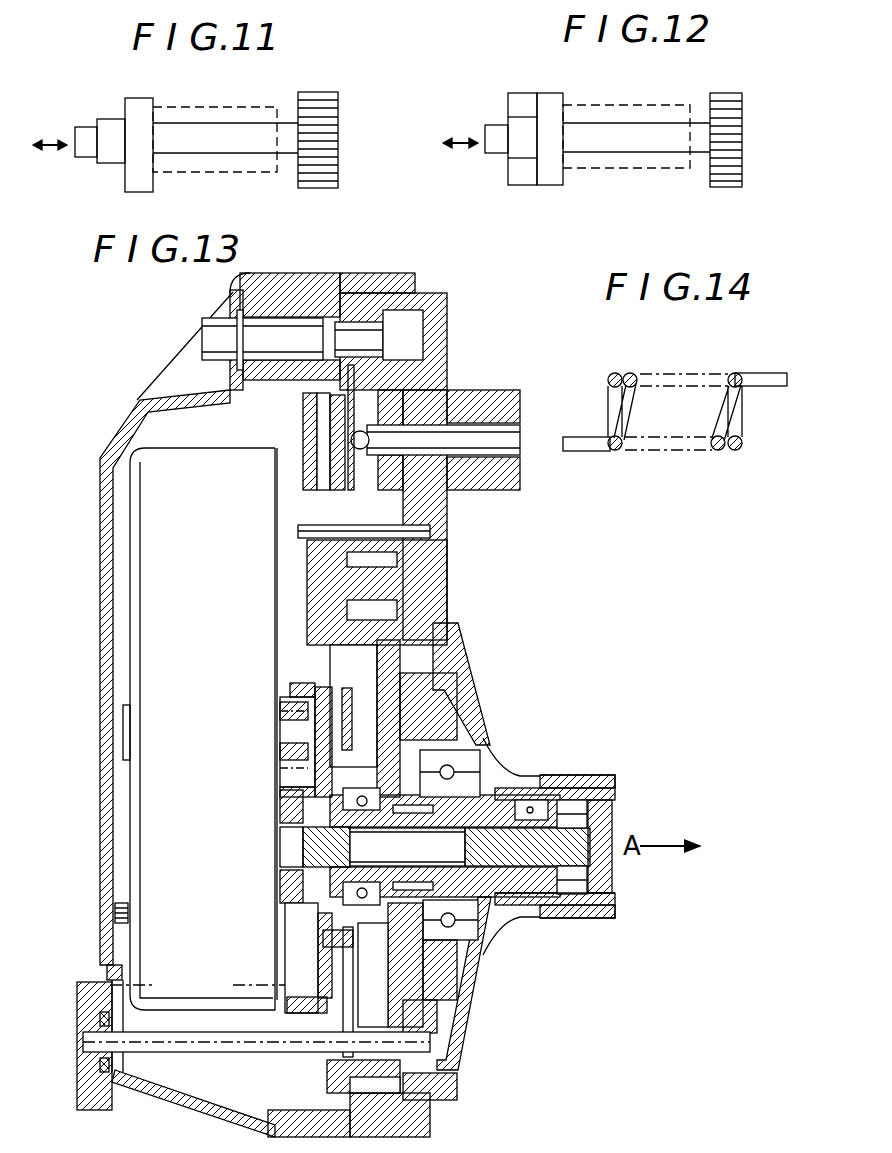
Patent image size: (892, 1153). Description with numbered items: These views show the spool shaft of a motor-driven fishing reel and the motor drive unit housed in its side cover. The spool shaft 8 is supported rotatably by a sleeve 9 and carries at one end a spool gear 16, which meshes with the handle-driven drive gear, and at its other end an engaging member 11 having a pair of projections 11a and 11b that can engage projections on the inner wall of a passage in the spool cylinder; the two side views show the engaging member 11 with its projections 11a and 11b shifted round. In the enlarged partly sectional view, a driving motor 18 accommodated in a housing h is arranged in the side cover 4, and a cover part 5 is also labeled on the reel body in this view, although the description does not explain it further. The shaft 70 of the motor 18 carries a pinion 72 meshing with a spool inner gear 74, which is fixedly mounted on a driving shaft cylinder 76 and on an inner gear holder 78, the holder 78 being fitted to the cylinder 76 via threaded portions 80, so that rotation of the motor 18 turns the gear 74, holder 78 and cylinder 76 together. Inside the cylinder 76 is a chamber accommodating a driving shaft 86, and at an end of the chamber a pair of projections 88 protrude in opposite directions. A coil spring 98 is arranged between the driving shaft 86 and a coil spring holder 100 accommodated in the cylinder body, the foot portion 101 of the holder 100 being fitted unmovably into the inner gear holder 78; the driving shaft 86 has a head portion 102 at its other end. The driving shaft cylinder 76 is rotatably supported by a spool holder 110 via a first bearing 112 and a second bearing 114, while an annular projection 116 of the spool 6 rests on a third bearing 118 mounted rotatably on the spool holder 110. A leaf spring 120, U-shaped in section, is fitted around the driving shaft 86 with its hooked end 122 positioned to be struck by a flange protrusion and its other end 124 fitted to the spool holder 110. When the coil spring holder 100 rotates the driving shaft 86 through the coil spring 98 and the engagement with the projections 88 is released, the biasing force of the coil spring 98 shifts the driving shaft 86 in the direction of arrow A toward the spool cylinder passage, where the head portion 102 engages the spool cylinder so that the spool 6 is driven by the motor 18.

In FIG. 11, the engaging member 11 is at (108, 115).
In FIG. 12, the engaging member 11 is at (544, 85).
In FIG. 12, the projection 11a is at (518, 107).
In FIG. 12, the projection 11b is at (520, 175).
In FIG. 11, the spool shaft 8 is at (200, 132).
In FIG. 12, the spool shaft 8 is at (628, 122).
In FIG. 11, the sleeve 9 is at (210, 160).
In FIG. 12, the sleeve 9 is at (633, 158).
In FIG. 11, the spool gear 16 is at (330, 110).
In FIG. 12, the spool gear 16 is at (735, 118).
In FIG. 13, the side cover 4 is at (134, 394).
In FIG. 13, the cover 5 is at (388, 272).
In FIG. 13, the spool 6 is at (465, 668).
In FIG. 13, the driving motor 18 is at (197, 637).
In FIG. 13, the spool inner gear 74 is at (285, 690).
In FIG. 13, the shaft 70 is at (285, 733).
In FIG. 13, the pinion 72 is at (282, 766).
In FIG. 13, the driving shaft cylinder 76 is at (493, 815).
In FIG. 13, the inner gear holder 78 is at (283, 812).
In FIG. 13, the threaded portions 80 is at (300, 833).
In FIG. 13, the driving shaft 86 is at (525, 858).
In FIG. 13, the projections 88 is at (575, 808).
In FIG. 14, the coil spring 98 is at (678, 372).
In FIG. 13, the coil spring 98 is at (470, 935).
In FIG. 13, the coil spring holder 100 is at (360, 850).
In FIG. 13, the foot portion 101 is at (300, 856).
In FIG. 13, the head portion 102 is at (610, 840).
In FIG. 13, the spool holder 110 is at (480, 790).
In FIG. 13, the first bearing 112 is at (535, 893).
In FIG. 13, the second bearing 114 is at (315, 905).
In FIG. 13, the annular projection 116 is at (457, 793).
In FIG. 13, the third bearing 118 is at (463, 935).
In FIG. 13, the leaf spring 120 is at (605, 905).
In FIG. 13, the hooked end 122 is at (608, 788).
In FIG. 13, the other end 124 is at (548, 805).
In FIG. 13, the housing h is at (100, 985).